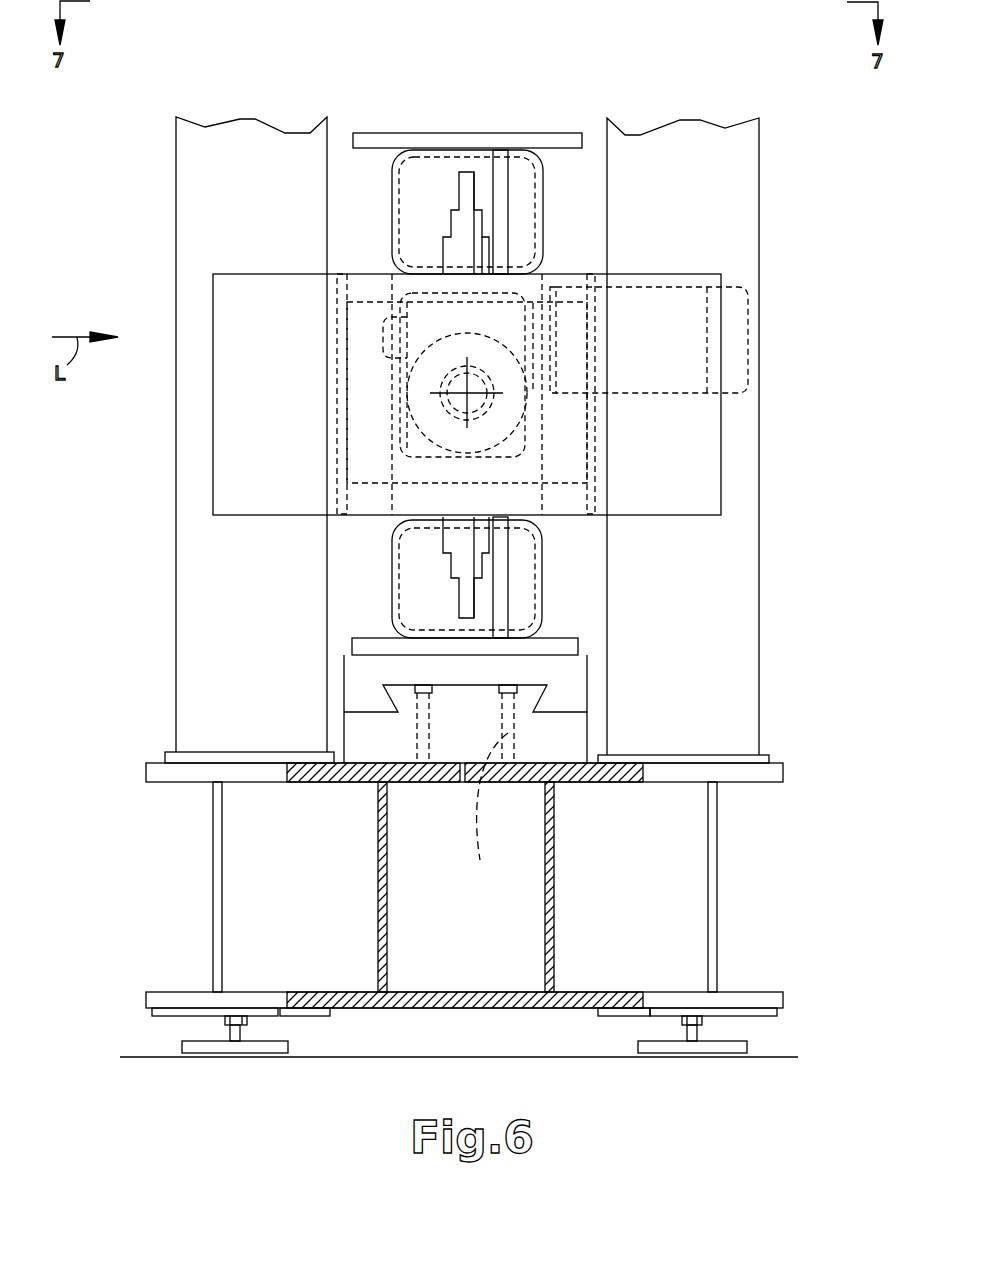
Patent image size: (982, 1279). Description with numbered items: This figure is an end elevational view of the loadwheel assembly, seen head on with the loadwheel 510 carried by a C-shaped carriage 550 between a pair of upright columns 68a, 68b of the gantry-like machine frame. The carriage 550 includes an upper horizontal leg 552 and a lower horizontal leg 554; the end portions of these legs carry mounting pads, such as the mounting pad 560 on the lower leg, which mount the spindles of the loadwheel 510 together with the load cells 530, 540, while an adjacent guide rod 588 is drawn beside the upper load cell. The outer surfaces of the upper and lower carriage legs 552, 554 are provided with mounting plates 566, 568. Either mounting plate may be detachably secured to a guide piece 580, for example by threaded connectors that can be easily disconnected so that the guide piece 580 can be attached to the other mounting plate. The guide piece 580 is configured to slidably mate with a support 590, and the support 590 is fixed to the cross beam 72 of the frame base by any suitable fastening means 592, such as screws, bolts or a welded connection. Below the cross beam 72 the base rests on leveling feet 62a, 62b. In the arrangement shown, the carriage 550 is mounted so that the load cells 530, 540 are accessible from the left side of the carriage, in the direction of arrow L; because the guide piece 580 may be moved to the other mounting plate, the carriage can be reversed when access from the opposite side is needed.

The column 68a is at (225, 178).
The column 68b is at (707, 183).
The cross beam 72 is at (422, 937).
The left leveling foot 62a is at (362, 1000).
The right leveling foot 62b is at (543, 1008).
The loadwheel 510 is at (693, 440).
The C-shaped carriage 550 is at (447, 142).
The mounting plate 566 is at (371, 138).
The upper horizontal leg 552 is at (548, 160).
The load cell 530 is at (468, 182).
The upper guide rod 588 is at (502, 163).
The lower horizontal leg 554 is at (392, 578).
The load cell 540 is at (467, 596).
The mounting pad 560 is at (497, 594).
The mounting plate 568 is at (578, 647).
The guide piece 580 is at (538, 774).
The support 590 is at (553, 742).
The fastening means 592 is at (477, 813).